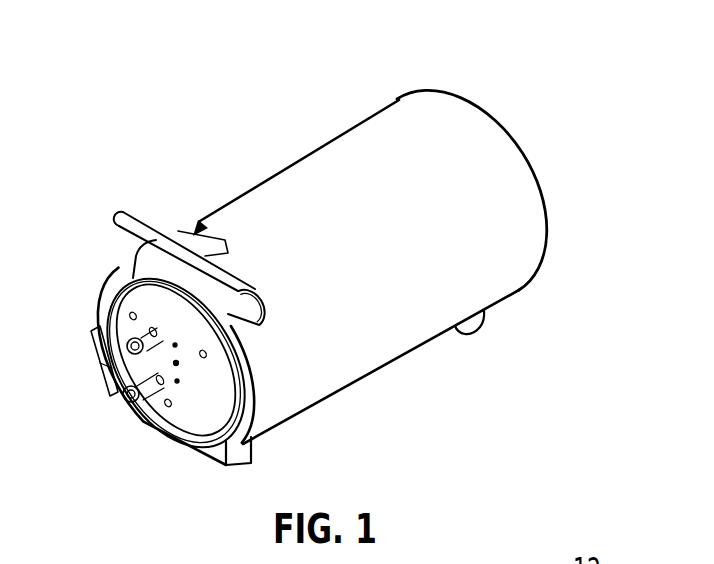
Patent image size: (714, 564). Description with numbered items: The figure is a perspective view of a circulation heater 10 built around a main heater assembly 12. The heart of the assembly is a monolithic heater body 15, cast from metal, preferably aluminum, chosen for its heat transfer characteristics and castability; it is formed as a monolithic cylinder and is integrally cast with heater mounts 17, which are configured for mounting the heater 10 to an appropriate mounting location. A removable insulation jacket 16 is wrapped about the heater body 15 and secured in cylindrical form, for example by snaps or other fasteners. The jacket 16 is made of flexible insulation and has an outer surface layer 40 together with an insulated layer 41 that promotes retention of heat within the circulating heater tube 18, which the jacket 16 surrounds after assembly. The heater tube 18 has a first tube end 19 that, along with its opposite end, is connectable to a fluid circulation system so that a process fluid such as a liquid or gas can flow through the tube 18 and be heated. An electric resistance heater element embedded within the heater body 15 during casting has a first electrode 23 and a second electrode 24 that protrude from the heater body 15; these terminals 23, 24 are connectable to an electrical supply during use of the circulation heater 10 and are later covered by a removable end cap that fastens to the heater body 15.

The circulation heater 10 is at (449, 400).
The main heater assembly 12 is at (553, 242).
The heater body 15 is at (190, 425).
The insulation jacket 16 is at (518, 190).
The heater mounts 17 is at (486, 328).
The circulating heater tube 18 is at (156, 212).
The first tube end 19 is at (124, 213).
The first electrode 23 is at (127, 340).
The second electrode 24 is at (147, 413).
The outer surface layer 40 is at (325, 167).
The insulated layer 41 is at (247, 414).